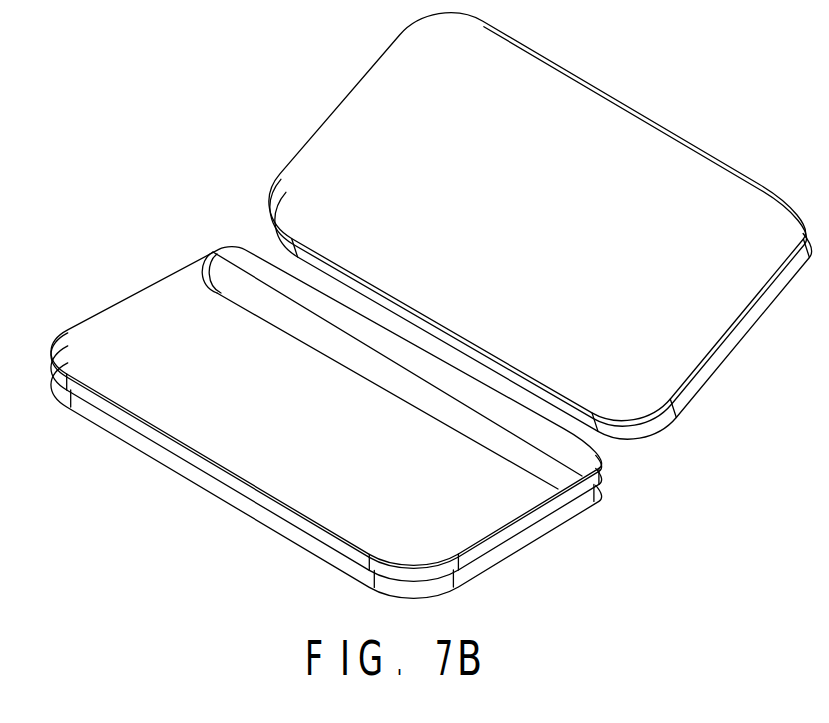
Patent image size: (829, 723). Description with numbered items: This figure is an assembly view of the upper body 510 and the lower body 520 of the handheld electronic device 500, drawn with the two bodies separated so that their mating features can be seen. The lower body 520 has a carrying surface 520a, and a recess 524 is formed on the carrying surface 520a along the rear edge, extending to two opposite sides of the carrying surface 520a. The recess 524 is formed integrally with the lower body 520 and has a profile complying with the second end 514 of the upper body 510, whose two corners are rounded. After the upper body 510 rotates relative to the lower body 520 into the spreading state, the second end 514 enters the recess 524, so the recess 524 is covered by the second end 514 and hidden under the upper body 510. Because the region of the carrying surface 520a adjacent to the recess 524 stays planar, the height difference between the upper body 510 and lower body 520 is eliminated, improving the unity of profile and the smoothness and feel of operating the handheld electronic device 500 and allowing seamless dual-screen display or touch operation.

The handheld electronic device 500 is at (431, 327).
The upper body 510 is at (540, 293).
The second end 514 is at (557, 398).
The lower body 520 is at (326, 378).
The carrying surface 520a is at (143, 340).
The recess 524 is at (258, 294).